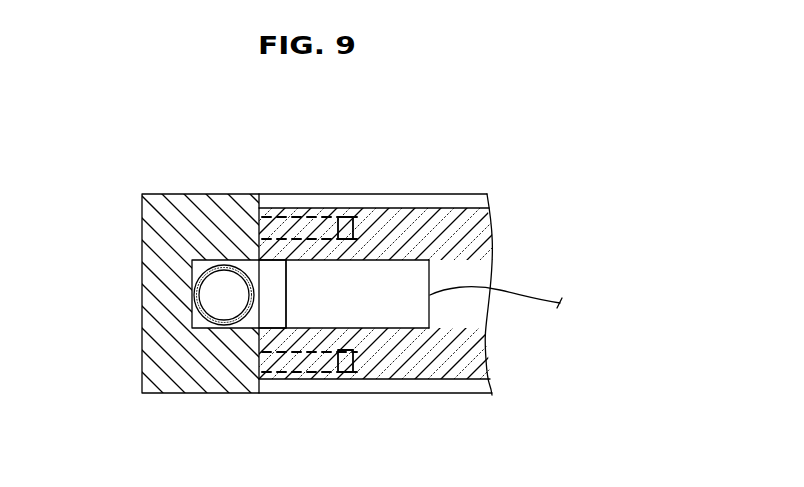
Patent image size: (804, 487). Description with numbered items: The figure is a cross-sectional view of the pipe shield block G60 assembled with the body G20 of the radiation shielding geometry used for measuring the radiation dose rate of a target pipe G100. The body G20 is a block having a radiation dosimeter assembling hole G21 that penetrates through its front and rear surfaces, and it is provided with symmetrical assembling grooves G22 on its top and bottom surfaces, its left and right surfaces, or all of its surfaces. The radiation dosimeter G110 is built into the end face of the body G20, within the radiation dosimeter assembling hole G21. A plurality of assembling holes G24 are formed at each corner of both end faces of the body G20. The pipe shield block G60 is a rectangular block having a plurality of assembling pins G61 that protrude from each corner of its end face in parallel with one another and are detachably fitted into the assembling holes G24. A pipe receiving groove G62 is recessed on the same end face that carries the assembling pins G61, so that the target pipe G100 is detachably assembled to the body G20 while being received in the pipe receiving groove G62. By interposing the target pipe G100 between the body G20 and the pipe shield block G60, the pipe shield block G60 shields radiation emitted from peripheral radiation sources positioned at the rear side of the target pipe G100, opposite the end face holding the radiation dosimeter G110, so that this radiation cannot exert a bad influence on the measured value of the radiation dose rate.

The body G20 is at (389, 292).
The radiation dosimeter assembling hole G21 is at (449, 317).
The assembling grooves G22 is at (450, 199).
The assembling holes G24 is at (346, 216).
The pipe shield block G60 is at (150, 212).
The assembling pins G61 is at (306, 193).
The pipe receiving groove G62 is at (217, 263).
The target pipe G100 is at (221, 322).
The radiation dosimeter G110 is at (384, 284).